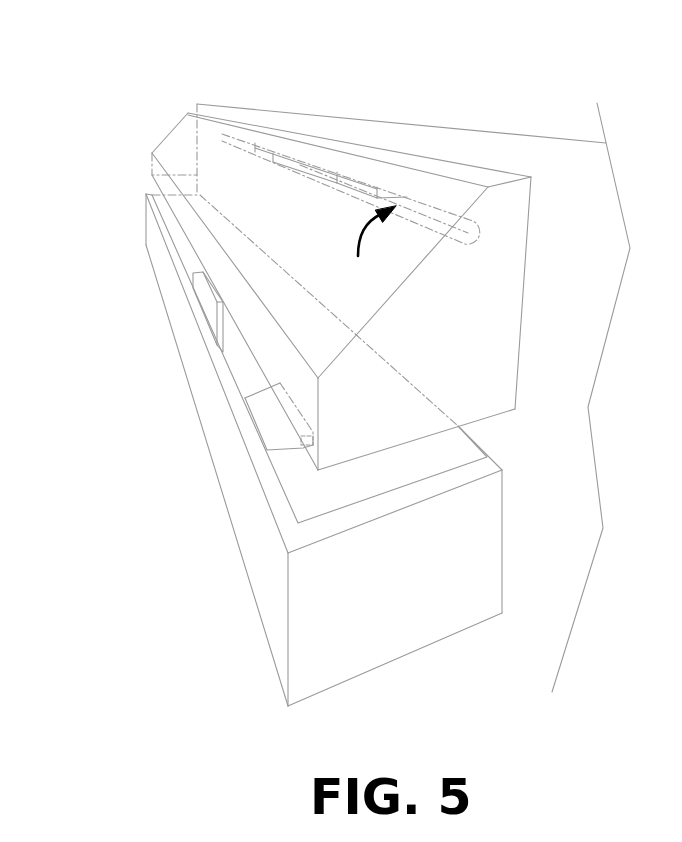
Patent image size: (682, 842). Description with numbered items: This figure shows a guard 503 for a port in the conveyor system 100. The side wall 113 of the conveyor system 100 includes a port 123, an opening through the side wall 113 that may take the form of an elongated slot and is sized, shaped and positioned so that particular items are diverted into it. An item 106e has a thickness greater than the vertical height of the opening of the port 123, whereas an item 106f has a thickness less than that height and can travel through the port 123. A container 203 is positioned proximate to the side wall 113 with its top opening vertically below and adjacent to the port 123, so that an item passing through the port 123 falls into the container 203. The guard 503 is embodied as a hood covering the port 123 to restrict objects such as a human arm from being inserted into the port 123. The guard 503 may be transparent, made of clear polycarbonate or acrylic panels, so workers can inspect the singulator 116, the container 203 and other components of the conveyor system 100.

The conveyor system 100 is at (62, 66).
The guard 503 is at (183, 152).
The singulator 116 is at (375, 118).
The side wall 113 is at (575, 273).
The item 106e is at (343, 174).
The port 123 is at (368, 241).
The container 203 is at (156, 262).
The item 106f is at (274, 430).